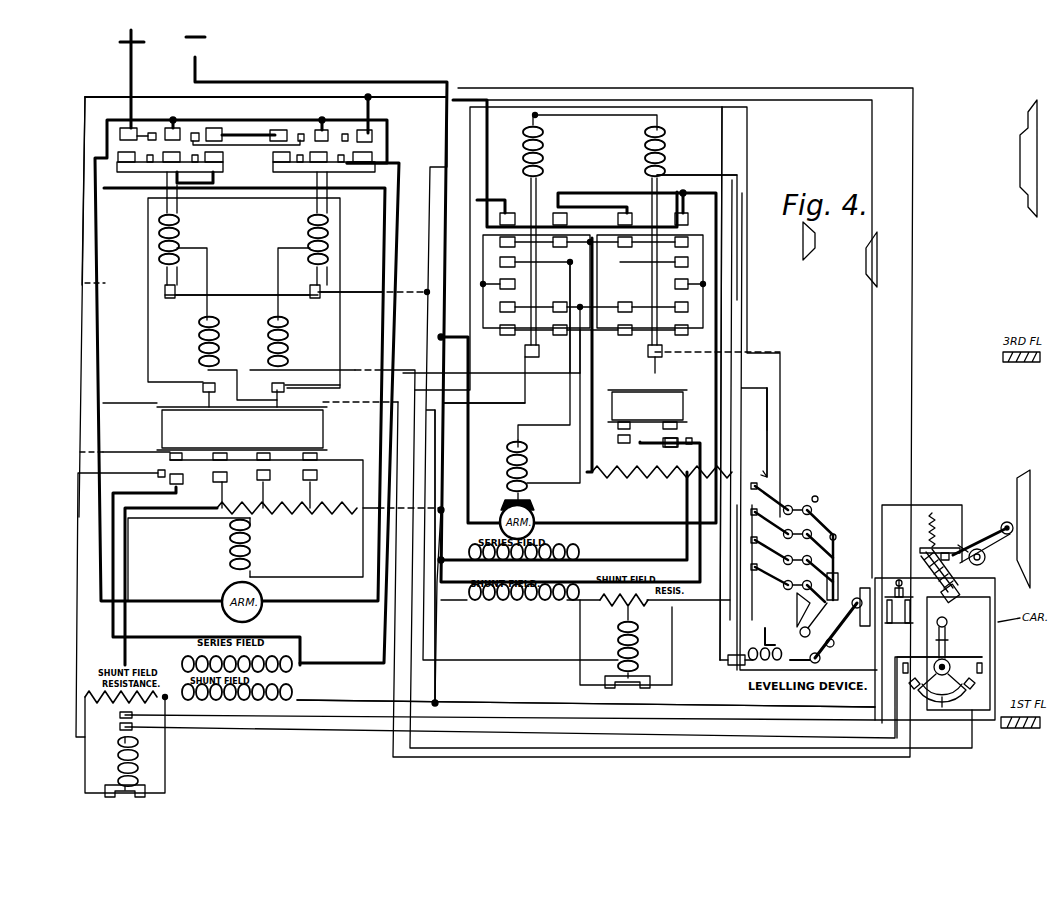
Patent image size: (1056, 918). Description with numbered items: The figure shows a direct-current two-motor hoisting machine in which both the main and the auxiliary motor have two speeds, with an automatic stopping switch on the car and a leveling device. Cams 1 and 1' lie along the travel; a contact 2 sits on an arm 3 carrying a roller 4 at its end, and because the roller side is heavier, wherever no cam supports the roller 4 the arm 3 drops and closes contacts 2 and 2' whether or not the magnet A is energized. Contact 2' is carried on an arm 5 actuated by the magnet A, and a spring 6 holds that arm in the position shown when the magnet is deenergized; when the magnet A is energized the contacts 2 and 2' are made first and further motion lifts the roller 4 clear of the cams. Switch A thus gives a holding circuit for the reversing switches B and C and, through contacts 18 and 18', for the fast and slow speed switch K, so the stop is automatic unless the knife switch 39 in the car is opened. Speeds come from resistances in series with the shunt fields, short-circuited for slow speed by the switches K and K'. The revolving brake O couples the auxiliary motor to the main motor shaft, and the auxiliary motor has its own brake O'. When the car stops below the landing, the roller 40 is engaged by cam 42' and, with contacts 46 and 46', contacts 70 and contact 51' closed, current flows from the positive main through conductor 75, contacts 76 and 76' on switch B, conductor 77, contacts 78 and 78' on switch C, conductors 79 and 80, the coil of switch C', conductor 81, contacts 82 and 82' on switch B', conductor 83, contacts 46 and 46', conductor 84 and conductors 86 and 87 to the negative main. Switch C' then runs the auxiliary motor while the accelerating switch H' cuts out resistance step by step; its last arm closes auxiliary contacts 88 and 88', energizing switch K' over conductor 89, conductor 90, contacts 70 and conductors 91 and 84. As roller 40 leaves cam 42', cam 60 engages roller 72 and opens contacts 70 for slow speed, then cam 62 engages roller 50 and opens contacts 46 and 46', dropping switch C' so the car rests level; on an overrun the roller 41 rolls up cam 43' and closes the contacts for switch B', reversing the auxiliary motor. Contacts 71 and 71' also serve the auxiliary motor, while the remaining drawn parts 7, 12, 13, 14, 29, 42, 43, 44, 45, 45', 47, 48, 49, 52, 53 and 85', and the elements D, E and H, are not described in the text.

The cam 1 is at (1030, 529).
The cam 1' is at (1013, 158).
The contact 2 is at (981, 552).
The contact 2' is at (971, 522).
The arm 3 is at (978, 553).
The roller 4 is at (1007, 522).
The arm 5 is at (975, 549).
The spring 6 is at (940, 525).
The rod 7 is at (950, 632).
The sector 12 is at (928, 707).
The pivot 13 is at (949, 672).
The stop 14 is at (939, 697).
The contact 18 is at (952, 576).
The contact 18' is at (946, 544).
The conductor 29 is at (913, 697).
The knife switch 39 is at (897, 578).
The roller 40 is at (852, 596).
The roller 41 is at (808, 625).
The pivot 42 is at (840, 643).
The cam 42' is at (857, 259).
The wedge 43 is at (792, 610).
The cam 43' is at (797, 241).
The link 44 is at (816, 657).
The switch arm 45 is at (781, 577).
The contact 45' is at (757, 590).
The contact 46 is at (781, 485).
The contact 46' is at (756, 432).
The link 47 is at (794, 598).
The link 48 is at (813, 510).
The link 49 is at (809, 558).
The roller 50 is at (822, 494).
The contact 51' is at (751, 653).
The rod 52 is at (860, 622).
The plunger 53 is at (838, 580).
The cam 60 is at (844, 536).
The cam 62 is at (838, 522).
The contact 70 is at (799, 493).
The contact 71 is at (781, 529).
The contact 71' is at (776, 529).
The roller 72 is at (792, 549).
The conductor 75 is at (84, 150).
The contact 76 is at (181, 285).
The contact 76' is at (173, 293).
The conductor 77 is at (235, 294).
The contact 78 is at (318, 300).
The contact 78' is at (331, 276).
The conductor 79 is at (350, 291).
The conductor 80 is at (430, 250).
The conductor 81 is at (683, 173).
The contact 82 is at (582, 359).
The contact 82' is at (519, 349).
The conductor 83 is at (653, 393).
The conductor 84 is at (722, 488).
The conductor 85' is at (729, 686).
The conductor 86 is at (676, 706).
The conductor 87 is at (440, 645).
The auxiliary contact 88 is at (725, 423).
The auxiliary contact 88' is at (659, 445).
The conductor 89 is at (533, 404).
The conductor 90 is at (700, 610).
The conductor 91 is at (722, 515).
The magnet A is at (938, 613).
The reversing switch B is at (147, 214).
The reversing switch B' is at (543, 205).
The reversing switch C is at (335, 214).
The switch C' is at (642, 207).
The switch D is at (200, 338).
The switch E is at (290, 343).
The controller H is at (242, 445).
The accelerating switch H' is at (647, 418).
The fast and slow speed switch K is at (118, 754).
The fast and slow speed switch K' is at (636, 647).
The brake O is at (287, 539).
The brake O' is at (529, 475).